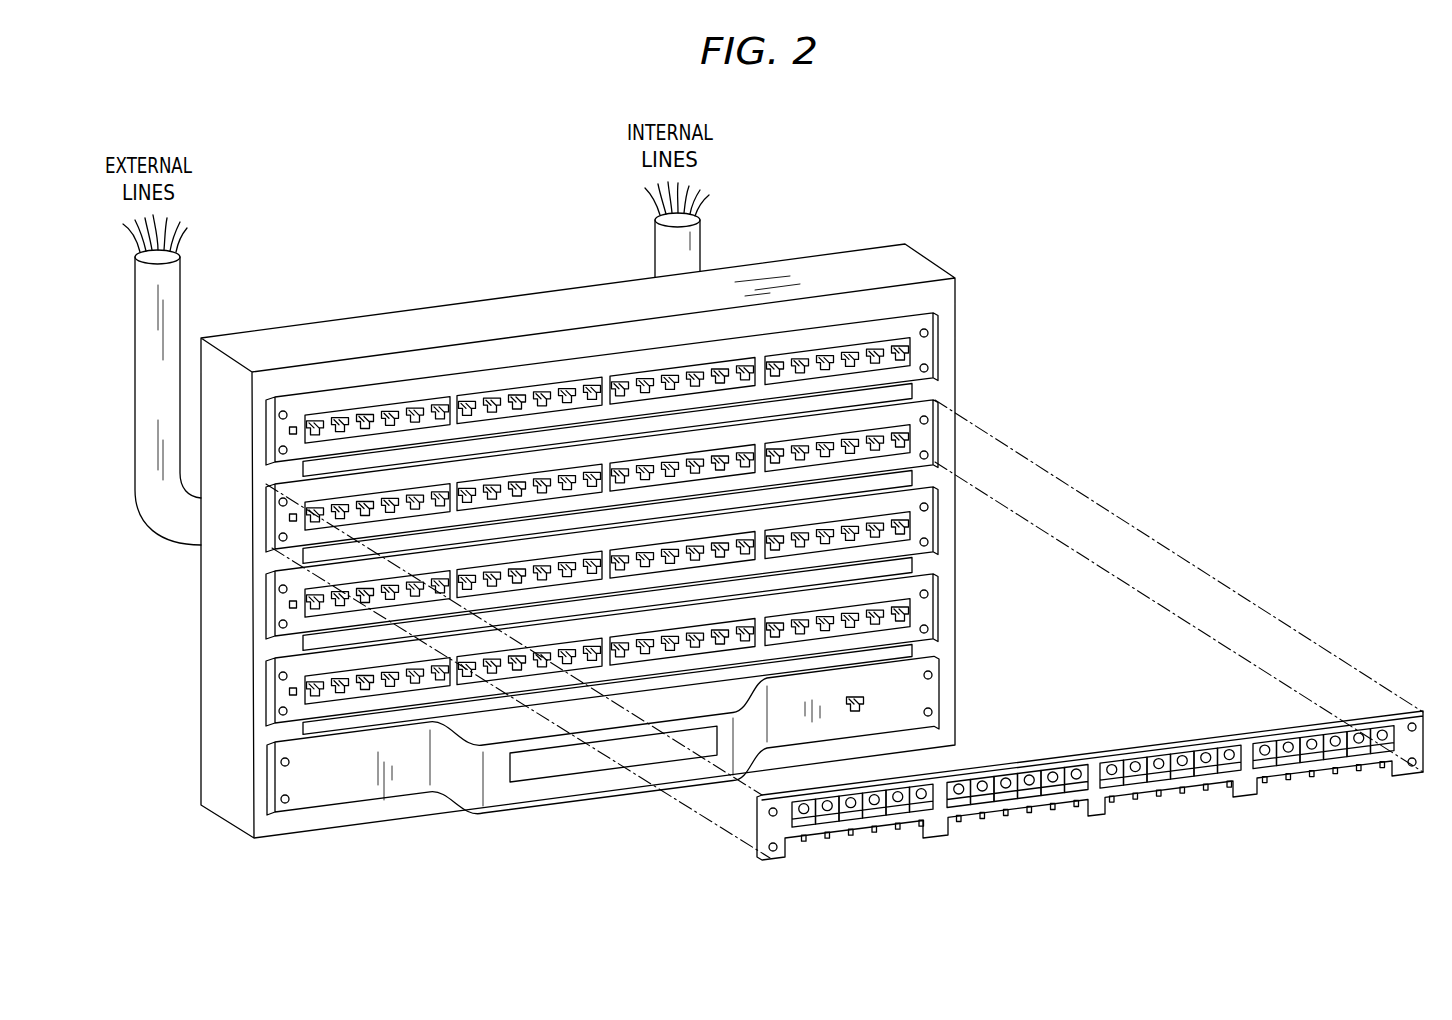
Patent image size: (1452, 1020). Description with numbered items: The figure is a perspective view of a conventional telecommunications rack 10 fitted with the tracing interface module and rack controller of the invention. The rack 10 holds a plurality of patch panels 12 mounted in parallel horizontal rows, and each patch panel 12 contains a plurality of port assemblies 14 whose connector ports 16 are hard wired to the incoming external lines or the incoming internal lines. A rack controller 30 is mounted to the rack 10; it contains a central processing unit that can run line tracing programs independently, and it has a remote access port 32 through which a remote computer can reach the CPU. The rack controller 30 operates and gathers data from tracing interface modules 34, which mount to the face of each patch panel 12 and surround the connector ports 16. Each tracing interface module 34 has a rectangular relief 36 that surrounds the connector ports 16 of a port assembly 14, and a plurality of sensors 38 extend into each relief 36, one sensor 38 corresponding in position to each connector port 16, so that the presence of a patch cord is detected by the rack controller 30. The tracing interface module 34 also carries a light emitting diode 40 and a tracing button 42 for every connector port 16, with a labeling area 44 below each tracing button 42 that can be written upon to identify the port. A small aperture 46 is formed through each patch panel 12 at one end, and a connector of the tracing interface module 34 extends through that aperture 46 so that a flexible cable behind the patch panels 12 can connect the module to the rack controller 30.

The telecommunications rack 10 is at (810, 253).
The patch panel 12 is at (584, 485).
The port assembly 14 is at (684, 325).
The connector port 16 is at (378, 345).
The rack controller 30 is at (638, 776).
The remote access port 32 is at (866, 700).
The tracing interface module 34 is at (1090, 781).
The rectangular relief 36 is at (978, 826).
The sensor 38 is at (1200, 791).
The light emitting diode 40 is at (1075, 760).
The tracing button 42 is at (1340, 746).
The labeling area 44 is at (1053, 800).
The aperture 46 is at (289, 692).